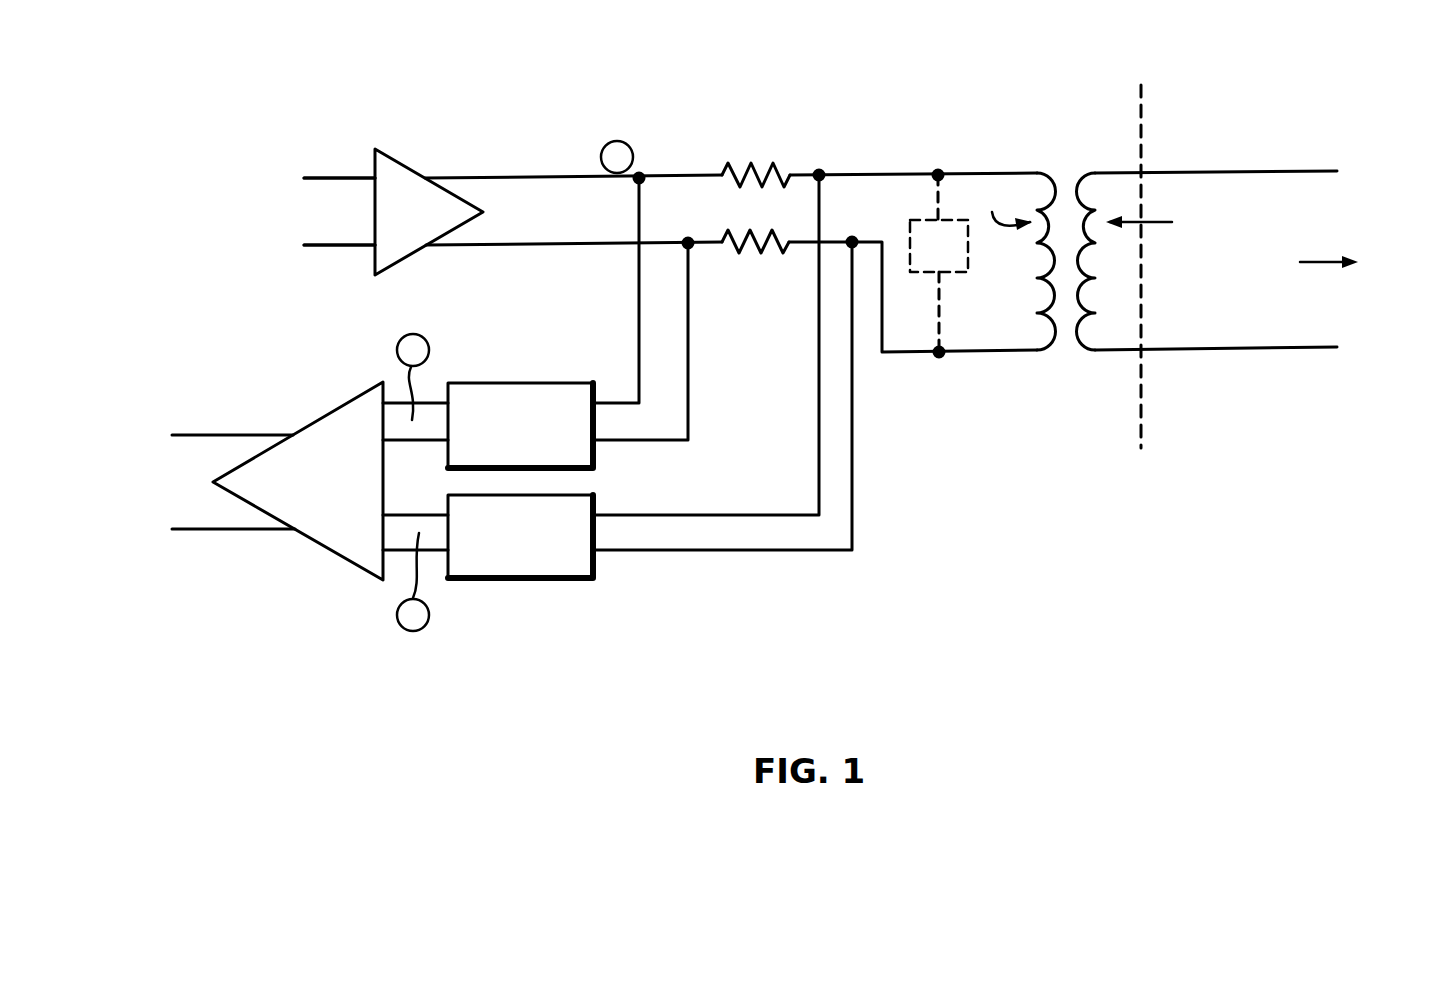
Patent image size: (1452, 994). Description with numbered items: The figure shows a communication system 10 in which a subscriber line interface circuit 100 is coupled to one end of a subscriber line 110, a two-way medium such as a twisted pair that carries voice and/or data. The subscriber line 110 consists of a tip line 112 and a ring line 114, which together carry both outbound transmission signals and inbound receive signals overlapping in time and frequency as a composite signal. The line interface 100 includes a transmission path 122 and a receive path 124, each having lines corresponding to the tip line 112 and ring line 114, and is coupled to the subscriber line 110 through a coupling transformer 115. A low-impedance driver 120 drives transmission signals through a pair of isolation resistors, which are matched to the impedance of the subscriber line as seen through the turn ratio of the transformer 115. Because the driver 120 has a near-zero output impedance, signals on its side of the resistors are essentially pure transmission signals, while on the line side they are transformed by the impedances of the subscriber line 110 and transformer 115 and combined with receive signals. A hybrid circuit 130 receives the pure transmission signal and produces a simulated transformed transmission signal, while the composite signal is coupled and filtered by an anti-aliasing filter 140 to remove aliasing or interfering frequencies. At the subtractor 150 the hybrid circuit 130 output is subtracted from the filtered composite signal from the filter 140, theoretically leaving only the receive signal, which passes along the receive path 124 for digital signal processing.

The communication system 10 is at (1053, 672).
The subscriber line interface circuit 100 is at (676, 106).
The subscriber line 110 is at (1388, 236).
The tip line 112 is at (1163, 172).
The ring line 114 is at (1181, 348).
The coupling transformer 115 is at (1072, 158).
The driver 120 is at (405, 166).
The transmission path 122 is at (296, 206).
The receive path 124 is at (174, 491).
The hybrid circuit 130 is at (492, 383).
The anti-aliasing filter 140 is at (492, 578).
The subtractor 150 is at (320, 544).